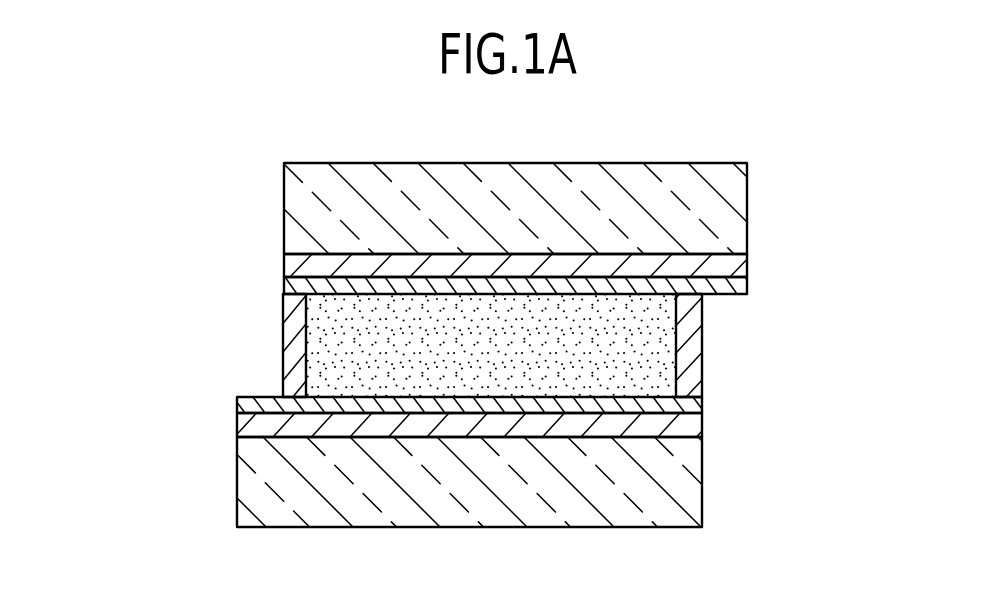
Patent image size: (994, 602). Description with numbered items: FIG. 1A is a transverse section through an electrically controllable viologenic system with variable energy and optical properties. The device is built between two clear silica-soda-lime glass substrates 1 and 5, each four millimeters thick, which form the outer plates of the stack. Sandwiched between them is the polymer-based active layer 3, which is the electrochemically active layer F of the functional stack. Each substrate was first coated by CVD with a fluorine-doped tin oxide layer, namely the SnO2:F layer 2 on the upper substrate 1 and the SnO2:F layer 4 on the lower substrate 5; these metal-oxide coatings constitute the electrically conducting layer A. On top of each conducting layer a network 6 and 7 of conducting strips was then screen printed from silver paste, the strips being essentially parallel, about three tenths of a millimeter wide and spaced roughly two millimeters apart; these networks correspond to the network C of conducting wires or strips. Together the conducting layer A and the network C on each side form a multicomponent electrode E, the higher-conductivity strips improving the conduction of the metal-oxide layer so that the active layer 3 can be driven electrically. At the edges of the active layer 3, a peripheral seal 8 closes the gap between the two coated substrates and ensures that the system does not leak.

The glass substrate 1 is at (725, 200).
The SnO2:F layer 2 is at (737, 267).
The active layer 3 is at (491, 345).
The SnO2:F layer 4 is at (688, 423).
The glass substrate 5 is at (678, 472).
The network of conducting strips 6 is at (737, 283).
The network of conducting strips 7 is at (688, 407).
The peripheral seal 8 is at (695, 335).
The electrically conducting layer A is at (467, 344).
The network of conducting wires or conducting strips C is at (451, 343).
The multicomponent electrode E is at (428, 344).
The electrochemically active layer F is at (436, 345).